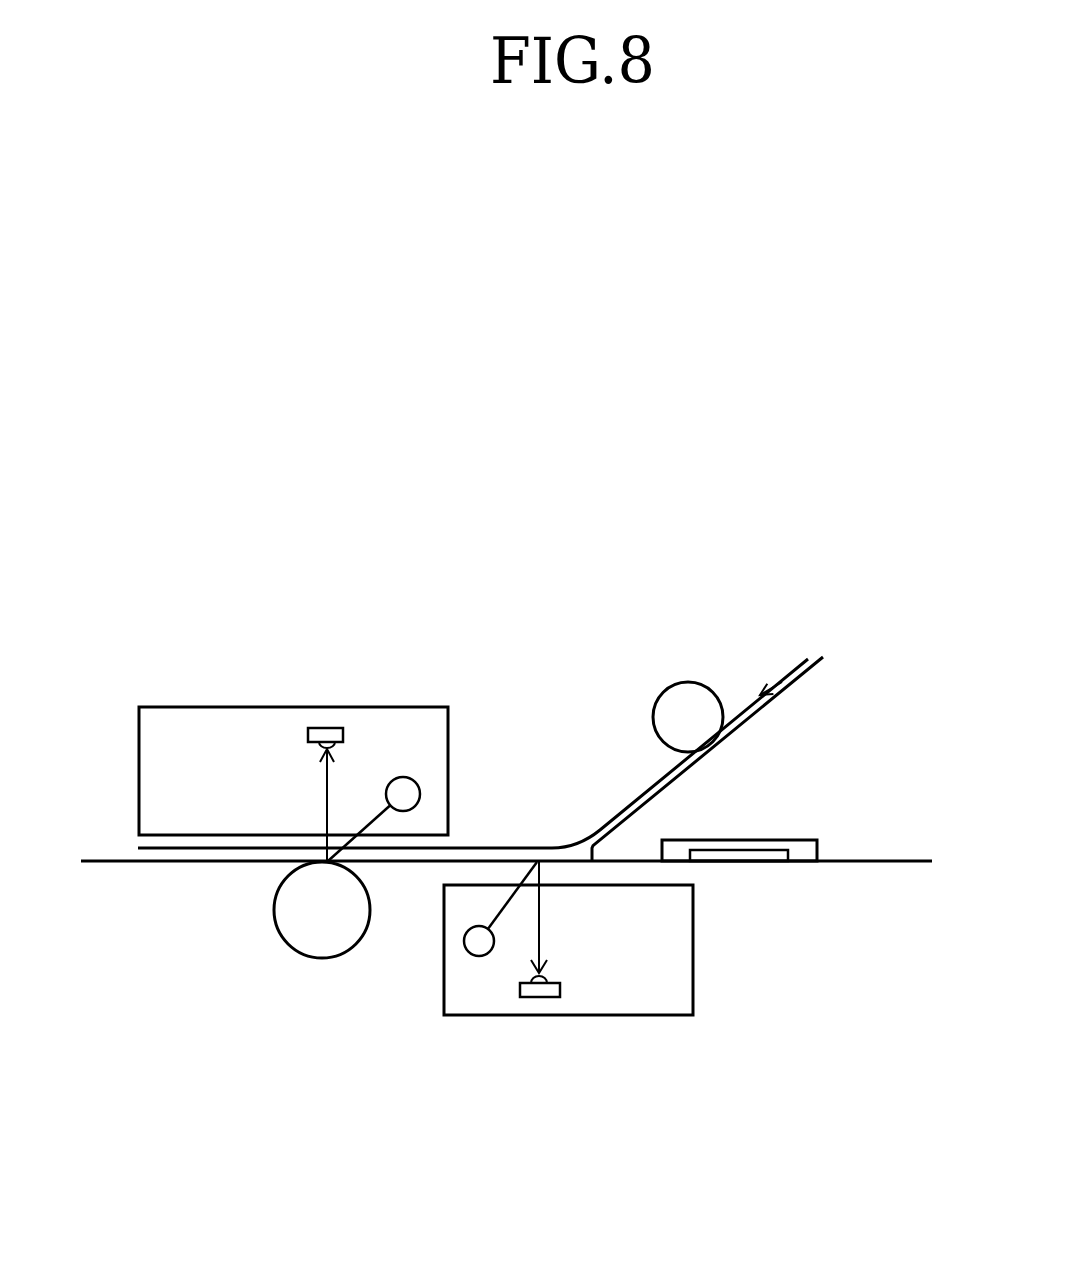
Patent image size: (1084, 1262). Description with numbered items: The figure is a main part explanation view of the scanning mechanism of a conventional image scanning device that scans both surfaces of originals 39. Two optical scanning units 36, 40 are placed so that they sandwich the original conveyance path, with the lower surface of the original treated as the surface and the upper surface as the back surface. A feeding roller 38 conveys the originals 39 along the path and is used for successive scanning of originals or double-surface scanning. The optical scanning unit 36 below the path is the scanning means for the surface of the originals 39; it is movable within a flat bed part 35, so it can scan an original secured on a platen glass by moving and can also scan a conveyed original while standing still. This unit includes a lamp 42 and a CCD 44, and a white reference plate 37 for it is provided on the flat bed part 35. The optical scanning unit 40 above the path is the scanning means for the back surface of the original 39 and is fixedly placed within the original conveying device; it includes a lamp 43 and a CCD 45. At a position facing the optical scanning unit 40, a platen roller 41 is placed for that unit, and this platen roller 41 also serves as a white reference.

The flat bed part 35 is at (877, 856).
The optical scanning unit 36 is at (640, 1015).
The white reference plate 37 is at (773, 851).
The feeding roller 38 is at (662, 702).
The original 39 is at (552, 847).
The optical scanning unit 40 is at (248, 707).
The platen roller 41 is at (303, 948).
The lamp 42 is at (466, 941).
The lamp 43 is at (421, 783).
The CCD 44 is at (533, 997).
The CCD 45 is at (328, 728).